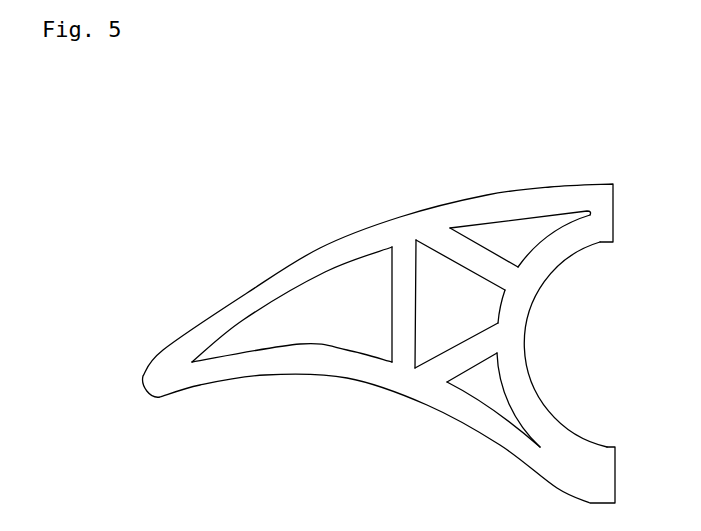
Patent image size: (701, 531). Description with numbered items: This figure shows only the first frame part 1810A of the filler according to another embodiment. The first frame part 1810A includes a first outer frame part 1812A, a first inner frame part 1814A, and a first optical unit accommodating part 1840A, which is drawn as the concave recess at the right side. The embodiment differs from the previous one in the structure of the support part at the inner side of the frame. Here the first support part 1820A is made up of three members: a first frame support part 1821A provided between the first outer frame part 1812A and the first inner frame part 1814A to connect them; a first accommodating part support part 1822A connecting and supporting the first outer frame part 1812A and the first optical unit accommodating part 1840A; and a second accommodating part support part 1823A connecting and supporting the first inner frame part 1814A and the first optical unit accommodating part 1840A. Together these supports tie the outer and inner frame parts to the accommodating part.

The first frame part 1810A is at (261, 203).
The first outer frame part 1812A is at (552, 200).
The first inner frame part 1814A is at (287, 357).
The first support part 1820A is at (485, 133).
The first frame support part 1821A is at (400, 283).
The first accommodating part support part 1822A is at (470, 257).
The second accommodating part support part 1823A is at (460, 355).
The first optical unit accommodating part 1840A is at (527, 333).